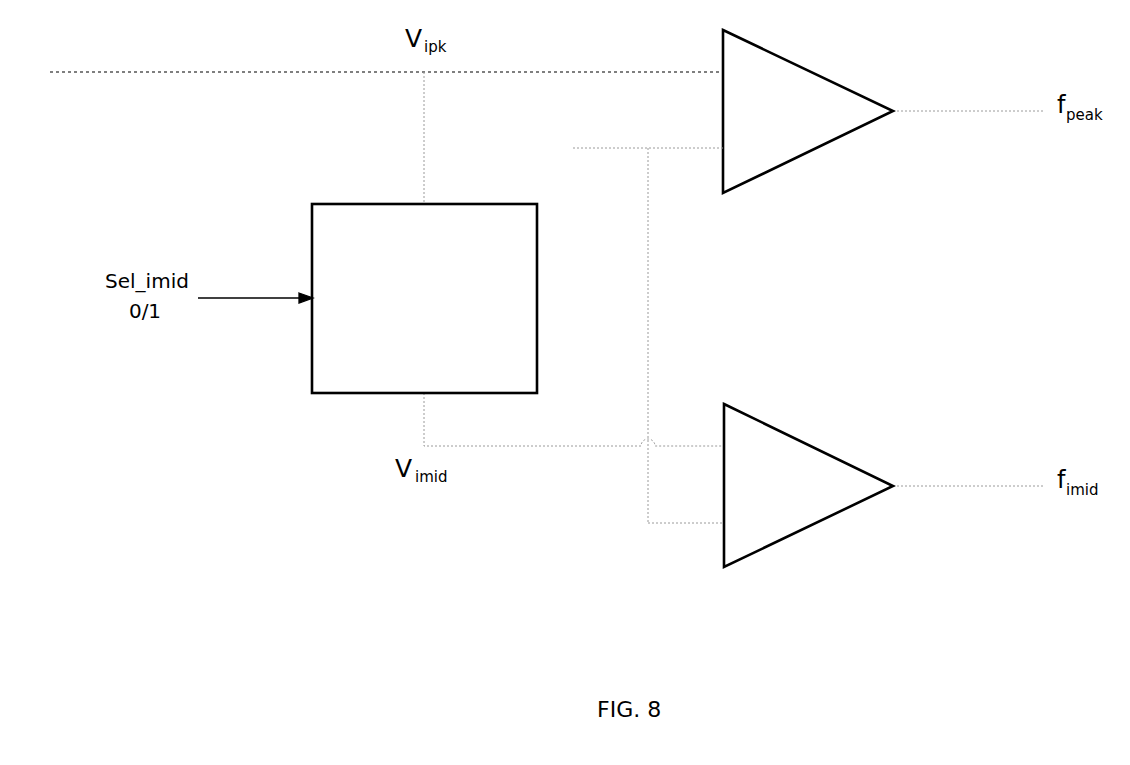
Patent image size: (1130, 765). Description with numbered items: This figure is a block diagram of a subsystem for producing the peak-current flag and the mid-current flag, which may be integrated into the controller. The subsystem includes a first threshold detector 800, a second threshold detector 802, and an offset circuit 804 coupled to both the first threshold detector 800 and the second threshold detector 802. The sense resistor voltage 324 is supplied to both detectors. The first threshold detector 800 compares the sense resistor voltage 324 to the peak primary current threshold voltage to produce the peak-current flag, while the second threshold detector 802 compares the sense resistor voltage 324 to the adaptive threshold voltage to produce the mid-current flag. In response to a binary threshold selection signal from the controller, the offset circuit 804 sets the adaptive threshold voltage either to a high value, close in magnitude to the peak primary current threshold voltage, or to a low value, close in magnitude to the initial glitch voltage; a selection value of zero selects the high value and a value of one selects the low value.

The first threshold detector 800 is at (808, 111).
The second threshold detector 802 is at (808, 485).
The offset circuit 804 is at (424, 298).
The sense resistor voltage 324 is at (597, 150).